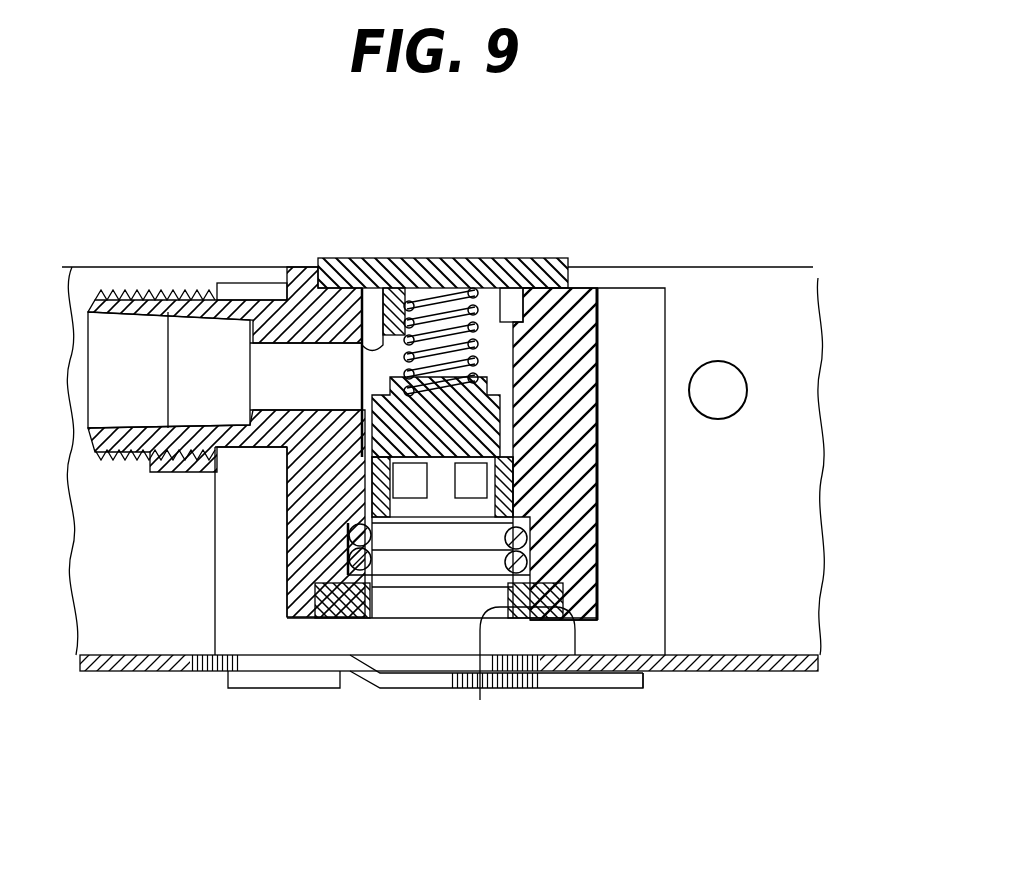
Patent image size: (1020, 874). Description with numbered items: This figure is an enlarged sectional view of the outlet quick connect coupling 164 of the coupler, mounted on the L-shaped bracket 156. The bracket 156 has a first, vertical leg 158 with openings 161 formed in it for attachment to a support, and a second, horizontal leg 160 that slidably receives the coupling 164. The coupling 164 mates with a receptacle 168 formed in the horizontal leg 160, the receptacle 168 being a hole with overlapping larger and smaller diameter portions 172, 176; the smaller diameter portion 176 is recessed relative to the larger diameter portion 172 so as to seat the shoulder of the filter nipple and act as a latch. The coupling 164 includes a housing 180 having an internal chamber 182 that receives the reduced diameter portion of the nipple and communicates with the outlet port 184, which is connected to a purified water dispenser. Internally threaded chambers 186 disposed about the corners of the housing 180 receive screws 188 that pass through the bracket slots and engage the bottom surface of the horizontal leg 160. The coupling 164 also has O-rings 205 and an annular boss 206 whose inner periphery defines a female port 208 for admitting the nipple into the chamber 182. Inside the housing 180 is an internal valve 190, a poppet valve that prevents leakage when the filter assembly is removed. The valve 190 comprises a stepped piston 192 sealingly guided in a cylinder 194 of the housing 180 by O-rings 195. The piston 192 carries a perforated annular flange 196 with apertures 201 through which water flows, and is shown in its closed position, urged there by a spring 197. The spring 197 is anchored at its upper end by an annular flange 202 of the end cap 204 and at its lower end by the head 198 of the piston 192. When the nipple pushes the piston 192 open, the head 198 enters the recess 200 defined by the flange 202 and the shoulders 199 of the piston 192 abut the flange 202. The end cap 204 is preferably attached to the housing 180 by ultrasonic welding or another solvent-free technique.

The L-shaped bracket 156 is at (824, 562).
The vertical leg 158 is at (818, 278).
The horizontal leg 160 is at (735, 672).
The openings 161 is at (747, 392).
The outlet quick connect coupling 164 is at (569, 218).
The receptacle 168 is at (220, 686).
The larger diameter portion 172 is at (200, 672).
The smaller diameter portion 176 is at (462, 690).
The housing 180 is at (582, 290).
The internal chamber 182 is at (372, 290).
The outlet port 184 is at (118, 292).
The internally threaded chambers 186 is at (217, 487).
The screws 188 is at (643, 690).
The internal valve 190 is at (325, 310).
The stepped piston 192 is at (352, 386).
The cylinder 194 is at (362, 490).
The O-rings 195 is at (560, 387).
The perforated annular flange 196 is at (510, 500).
The spring 197 is at (372, 346).
The head 198 is at (483, 290).
The shoulders 199 is at (631, 468).
The recess 200 is at (425, 258).
The apertures 201 is at (410, 483).
The annular flange 202 is at (395, 258).
The end cap 204 is at (509, 258).
The O-rings 205 is at (353, 575).
The annular boss 206 is at (576, 622).
The female port 208 is at (482, 622).